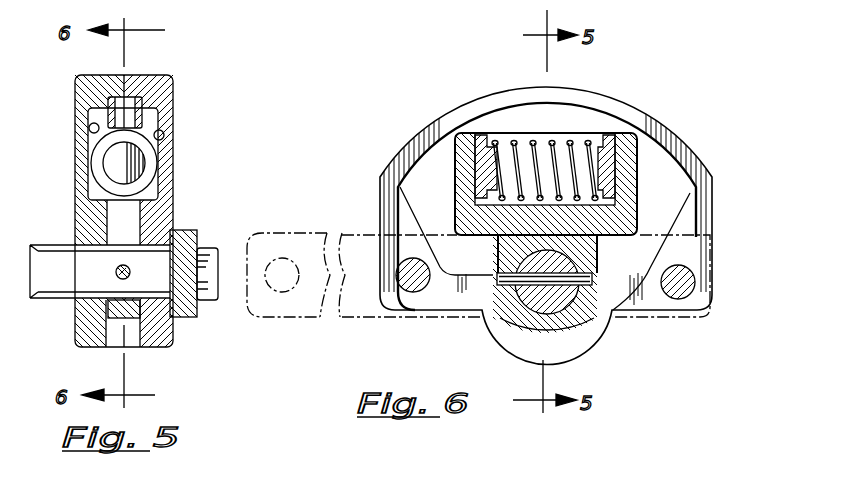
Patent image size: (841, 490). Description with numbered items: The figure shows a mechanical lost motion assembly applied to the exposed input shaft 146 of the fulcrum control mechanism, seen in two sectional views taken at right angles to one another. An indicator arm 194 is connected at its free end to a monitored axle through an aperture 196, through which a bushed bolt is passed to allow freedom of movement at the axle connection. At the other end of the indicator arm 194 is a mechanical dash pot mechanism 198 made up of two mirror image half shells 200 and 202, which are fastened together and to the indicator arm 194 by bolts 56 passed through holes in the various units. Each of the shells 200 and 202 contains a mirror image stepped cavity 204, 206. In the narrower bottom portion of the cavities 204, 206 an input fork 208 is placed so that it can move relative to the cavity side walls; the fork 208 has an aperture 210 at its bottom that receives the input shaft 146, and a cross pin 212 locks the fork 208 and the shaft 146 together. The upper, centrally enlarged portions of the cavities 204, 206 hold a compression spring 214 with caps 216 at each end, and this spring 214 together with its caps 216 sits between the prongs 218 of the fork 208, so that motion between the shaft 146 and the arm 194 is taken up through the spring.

In FIG. 5, the bolts 56 is at (207, 238).
In FIG. 6, the bolts 56 is at (688, 282).
In FIG. 5, the input shaft 146 is at (62, 303).
In FIG. 6, the input shaft 146 is at (562, 296).
In FIG. 5, the indicator arm 194 is at (182, 228).
In FIG. 6, the indicator arm 194 is at (397, 323).
In FIG. 6, the aperture 196 is at (290, 258).
In FIG. 5, the mechanical dash pot mechanism 198 is at (184, 117).
In FIG. 6, the mechanical dash pot mechanism 198 is at (414, 116).
In FIG. 5, the half shell 200 is at (78, 104).
In FIG. 6, the half shell 200 is at (412, 137).
In FIG. 5, the half shell 202 is at (175, 98).
In FIG. 5, the stepped cavity 204 is at (89, 128).
In FIG. 6, the stepped cavity 204 is at (422, 153).
In FIG. 5, the stepped cavity 206 is at (168, 138).
In FIG. 6, the input fork 208 is at (660, 213).
In FIG. 6, the aperture 210 is at (567, 257).
In FIG. 5, the cross pin 212 is at (116, 272).
In FIG. 6, the cross pin 212 is at (512, 275).
In FIG. 5, the compression spring 214 is at (152, 172).
In FIG. 6, the compression spring 214 is at (572, 140).
In FIG. 6, the caps 216 is at (503, 146).
In FIG. 6, the prongs 218 is at (457, 186).